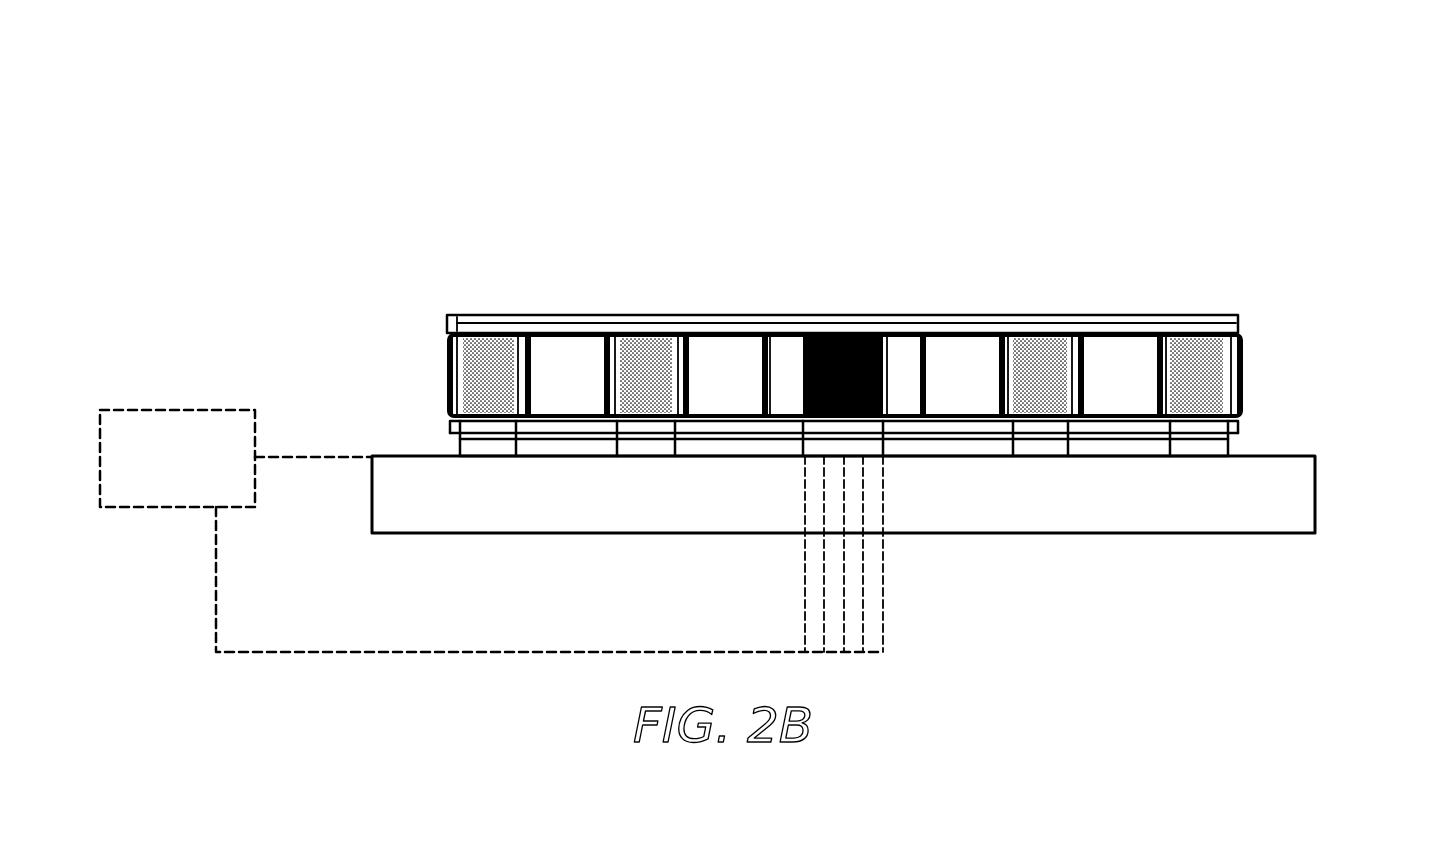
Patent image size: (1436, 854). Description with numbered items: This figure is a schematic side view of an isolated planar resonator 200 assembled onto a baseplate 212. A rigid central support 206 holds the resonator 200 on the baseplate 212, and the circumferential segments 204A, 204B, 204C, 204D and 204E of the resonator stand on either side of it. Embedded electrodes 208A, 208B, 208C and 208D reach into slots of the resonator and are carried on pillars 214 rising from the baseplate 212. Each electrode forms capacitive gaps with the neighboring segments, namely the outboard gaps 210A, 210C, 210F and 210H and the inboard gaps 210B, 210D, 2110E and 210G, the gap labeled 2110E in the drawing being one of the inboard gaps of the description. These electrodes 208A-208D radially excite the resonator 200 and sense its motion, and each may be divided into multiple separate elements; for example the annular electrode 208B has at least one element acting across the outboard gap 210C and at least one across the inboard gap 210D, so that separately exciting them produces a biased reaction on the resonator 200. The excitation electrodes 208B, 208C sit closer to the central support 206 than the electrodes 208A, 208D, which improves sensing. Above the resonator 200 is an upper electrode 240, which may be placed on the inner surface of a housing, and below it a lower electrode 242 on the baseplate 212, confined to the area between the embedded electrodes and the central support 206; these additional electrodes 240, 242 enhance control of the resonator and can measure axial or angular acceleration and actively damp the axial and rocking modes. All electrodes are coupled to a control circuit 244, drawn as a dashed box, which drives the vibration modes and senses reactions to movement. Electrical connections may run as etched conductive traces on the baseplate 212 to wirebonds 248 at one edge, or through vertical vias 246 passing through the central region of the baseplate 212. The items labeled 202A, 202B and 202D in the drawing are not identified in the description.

The isolated resonator 200 is at (1302, 88).
The first electrode 202A is at (907, 332).
The first electrode 202B is at (960, 332).
The first electrode 202D is at (1163, 332).
The circumferential segment 204A is at (925, 332).
The circumferential segment 204B is at (1000, 332).
The circumferential segment 204C is at (1130, 332).
The circumferential segment 204D is at (1172, 332).
The circumferential segment 204E is at (1242, 375).
The central support 206 is at (847, 332).
The embedded electrode 208A is at (490, 334).
The annular electrode 208B is at (647, 332).
The embedded electrode 208C is at (1053, 332).
The embedded electrode 208D is at (1216, 332).
The outboard capacitive gap 210A is at (453, 317).
The inboard capacitive gap 210B is at (517, 334).
The outboard capacitive gap 210C is at (615, 332).
The inboard capacitive gap 210D is at (678, 332).
The inboard capacitive gap 2110E is at (1027, 332).
The outboard capacitive gap 210F is at (1083, 332).
The inboard capacitive gap 210G is at (1213, 332).
The outboard capacitive gap 210H is at (1240, 318).
The baseplate 212 is at (1315, 491).
The pillars 214 is at (460, 455).
The upper electrode 240 is at (752, 315).
The lower electrode 242 is at (450, 434).
The control circuit 244 is at (177, 508).
The vertical vias 246 is at (906, 513).
The wirebonds 248 is at (347, 480).